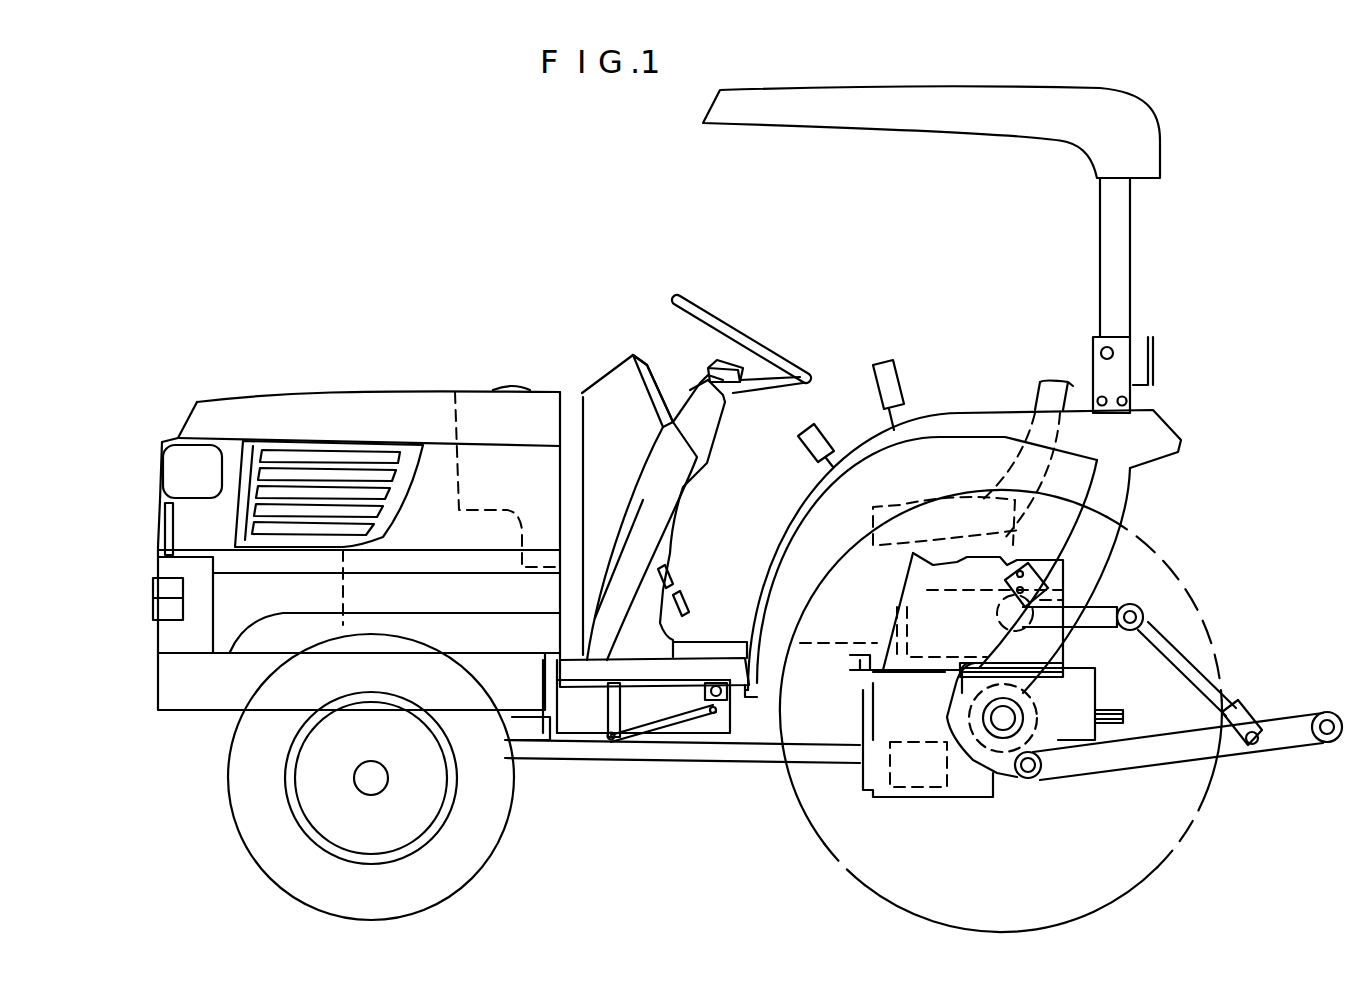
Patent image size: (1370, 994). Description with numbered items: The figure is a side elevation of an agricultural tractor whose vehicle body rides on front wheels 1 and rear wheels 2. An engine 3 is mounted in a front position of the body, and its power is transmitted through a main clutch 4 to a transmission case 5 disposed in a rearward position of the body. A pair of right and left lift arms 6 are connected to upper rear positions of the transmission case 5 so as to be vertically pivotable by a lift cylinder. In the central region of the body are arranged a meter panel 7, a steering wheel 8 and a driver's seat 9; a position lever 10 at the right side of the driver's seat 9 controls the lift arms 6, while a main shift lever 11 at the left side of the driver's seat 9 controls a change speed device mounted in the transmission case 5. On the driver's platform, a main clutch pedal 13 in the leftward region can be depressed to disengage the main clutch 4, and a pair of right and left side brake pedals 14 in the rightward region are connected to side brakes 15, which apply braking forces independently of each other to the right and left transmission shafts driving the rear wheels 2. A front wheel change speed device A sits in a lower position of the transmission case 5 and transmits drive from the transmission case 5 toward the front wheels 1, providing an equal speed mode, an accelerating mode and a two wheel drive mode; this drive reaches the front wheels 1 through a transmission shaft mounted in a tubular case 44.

The front wheels 1 is at (228, 780).
The rear wheels 2 is at (1213, 793).
The engine 3 is at (502, 463).
The main clutch 4 is at (583, 722).
The tubular case 44 is at (641, 752).
The transmission case 5 is at (975, 790).
The lift arms 6 is at (1102, 616).
The meter panel 7 is at (652, 402).
The steering wheel 8 is at (715, 323).
The driver's seat 9 is at (1045, 387).
The position lever 10 is at (885, 362).
The main shift lever 11 is at (805, 438).
The main clutch pedal 13 is at (668, 570).
The side brake pedals 14 is at (682, 603).
The side brakes 15 is at (1003, 752).
The front wheel change speed device A is at (917, 790).